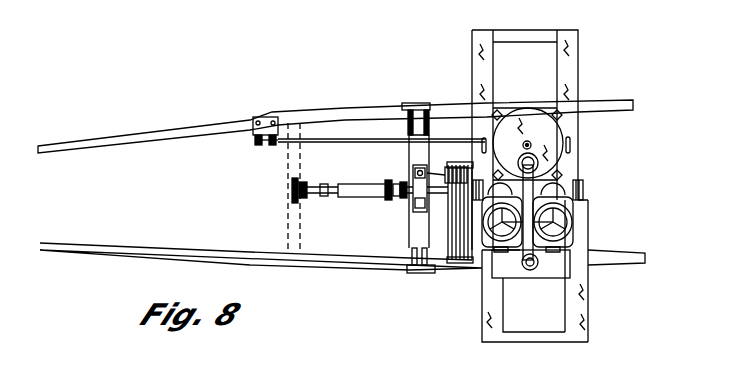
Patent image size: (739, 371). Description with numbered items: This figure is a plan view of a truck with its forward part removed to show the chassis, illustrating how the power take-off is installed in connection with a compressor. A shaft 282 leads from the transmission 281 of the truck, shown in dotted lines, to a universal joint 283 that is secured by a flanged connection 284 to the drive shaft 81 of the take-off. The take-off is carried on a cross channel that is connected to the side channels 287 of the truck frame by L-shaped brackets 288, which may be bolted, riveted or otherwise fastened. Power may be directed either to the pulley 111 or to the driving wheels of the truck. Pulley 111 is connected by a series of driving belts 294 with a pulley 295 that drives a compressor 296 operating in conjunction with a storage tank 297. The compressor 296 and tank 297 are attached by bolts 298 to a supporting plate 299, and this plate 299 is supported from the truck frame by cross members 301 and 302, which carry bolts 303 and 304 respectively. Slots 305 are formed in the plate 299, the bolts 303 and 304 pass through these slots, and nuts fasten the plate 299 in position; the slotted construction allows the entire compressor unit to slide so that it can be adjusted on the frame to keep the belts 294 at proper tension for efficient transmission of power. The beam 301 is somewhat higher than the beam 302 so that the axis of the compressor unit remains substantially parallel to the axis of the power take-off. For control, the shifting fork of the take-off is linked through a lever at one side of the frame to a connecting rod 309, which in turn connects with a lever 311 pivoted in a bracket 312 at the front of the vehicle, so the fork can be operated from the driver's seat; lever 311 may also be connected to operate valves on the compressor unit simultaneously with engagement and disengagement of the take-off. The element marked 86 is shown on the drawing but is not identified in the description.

The side channels 287 is at (358, 108).
The L-shaped brackets 288 is at (417, 103).
The slots 305 is at (484, 138).
The bolts 298 is at (560, 113).
The storage tank 297 is at (546, 133).
The bolt 304 is at (572, 148).
The supporting plate 299 is at (570, 165).
The bolt 303 is at (514, 147).
The compressor 296 is at (568, 208).
The cross member 302 is at (588, 322).
The cross member 301 is at (493, 330).
The pulley 295 is at (493, 276).
The driving belts 294 is at (458, 264).
The pulley 111 is at (460, 167).
The link 86 is at (428, 173).
The drive shaft 81 is at (404, 196).
The flanged connection 284 is at (398, 180).
The universal joint 283 is at (376, 185).
The shaft 282 is at (350, 197).
The transmission 281 is at (290, 200).
The connecting rod 309 is at (381, 149).
The lever 311 is at (263, 146).
The bracket 312 is at (252, 126).